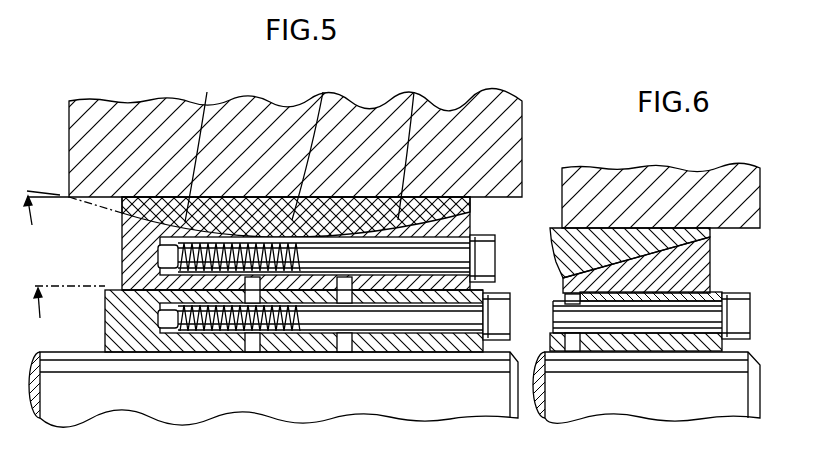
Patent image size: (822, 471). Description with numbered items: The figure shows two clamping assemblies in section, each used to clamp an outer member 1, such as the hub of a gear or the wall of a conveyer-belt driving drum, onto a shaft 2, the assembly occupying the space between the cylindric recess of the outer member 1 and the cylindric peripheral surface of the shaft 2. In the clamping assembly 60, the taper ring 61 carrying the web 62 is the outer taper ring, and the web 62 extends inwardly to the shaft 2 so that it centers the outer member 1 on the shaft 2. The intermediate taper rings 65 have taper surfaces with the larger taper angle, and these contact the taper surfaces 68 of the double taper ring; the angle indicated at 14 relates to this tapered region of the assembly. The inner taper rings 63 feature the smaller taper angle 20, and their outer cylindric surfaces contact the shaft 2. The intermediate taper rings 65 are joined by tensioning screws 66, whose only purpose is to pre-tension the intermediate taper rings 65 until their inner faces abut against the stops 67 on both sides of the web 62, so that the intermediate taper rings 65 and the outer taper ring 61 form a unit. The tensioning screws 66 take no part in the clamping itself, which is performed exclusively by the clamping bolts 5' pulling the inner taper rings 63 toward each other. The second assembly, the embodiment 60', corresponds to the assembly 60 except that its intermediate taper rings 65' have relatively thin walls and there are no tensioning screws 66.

In FIG. 5, the outer member 1 is at (490, 120).
In FIG. 6, the outer member 1 is at (675, 180).
In FIG. 5, the shaft 2 is at (92, 375).
In FIG. 6, the shaft 2 is at (740, 372).
In FIG. 5, the clamping bolts 5' is at (346, 308).
In FIG. 6, the clamping bolts 5' is at (668, 321).
In FIG. 5, the wedge angle 14 is at (30, 182).
In FIG. 5, the smaller taper angle 20 is at (38, 283).
In FIG. 5, the clamping assembly 60 is at (553, 158).
In FIG. 6, the clamping assembly embodiment 60' is at (779, 251).
In FIG. 5, the outer taper ring 61 is at (316, 144).
In FIG. 5, the web 62 is at (278, 342).
In FIG. 5, the inner taper rings 63 is at (138, 343).
In FIG. 5, the intermediate taper rings 65 is at (308, 243).
In FIG. 6, the intermediate taper rings 65' is at (656, 260).
In FIG. 5, the tensioning screws 66 is at (483, 248).
In FIG. 5, the stops 67 is at (338, 295).
In FIG. 5, the taper surfaces 68 is at (308, 145).